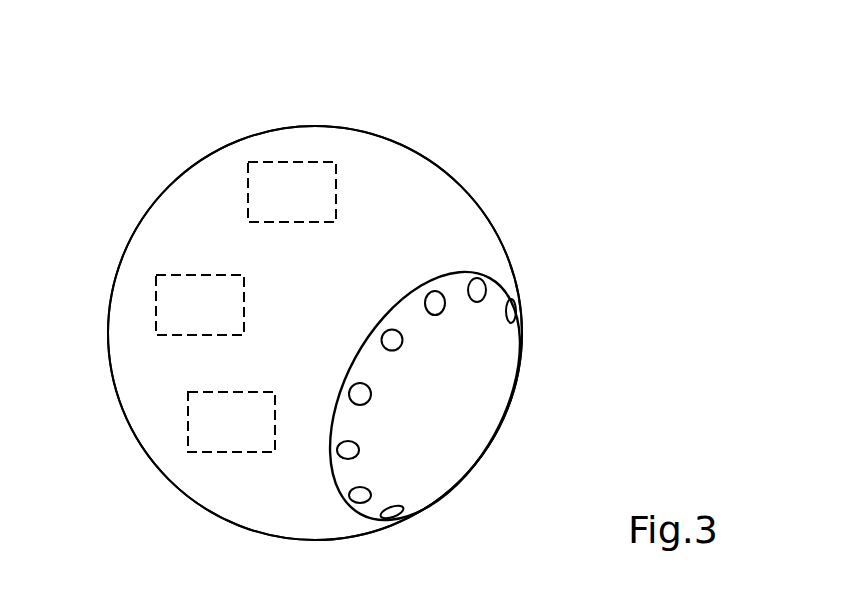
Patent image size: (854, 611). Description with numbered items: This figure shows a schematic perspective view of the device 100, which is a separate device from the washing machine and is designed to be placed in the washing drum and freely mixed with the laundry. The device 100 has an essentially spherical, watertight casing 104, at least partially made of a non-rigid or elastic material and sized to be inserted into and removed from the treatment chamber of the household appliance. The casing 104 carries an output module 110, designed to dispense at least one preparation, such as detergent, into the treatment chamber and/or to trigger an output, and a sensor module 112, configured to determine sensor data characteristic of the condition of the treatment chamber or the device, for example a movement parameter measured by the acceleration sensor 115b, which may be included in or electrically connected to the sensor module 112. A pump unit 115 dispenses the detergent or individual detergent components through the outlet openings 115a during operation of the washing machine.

The device 100 is at (430, 116).
The casing 104 is at (143, 222).
The sensor module 112 is at (273, 205).
The acceleration sensor 115b is at (226, 318).
The output module 110 is at (214, 433).
The pump unit 115 is at (486, 258).
The outlet openings 115a is at (414, 296).